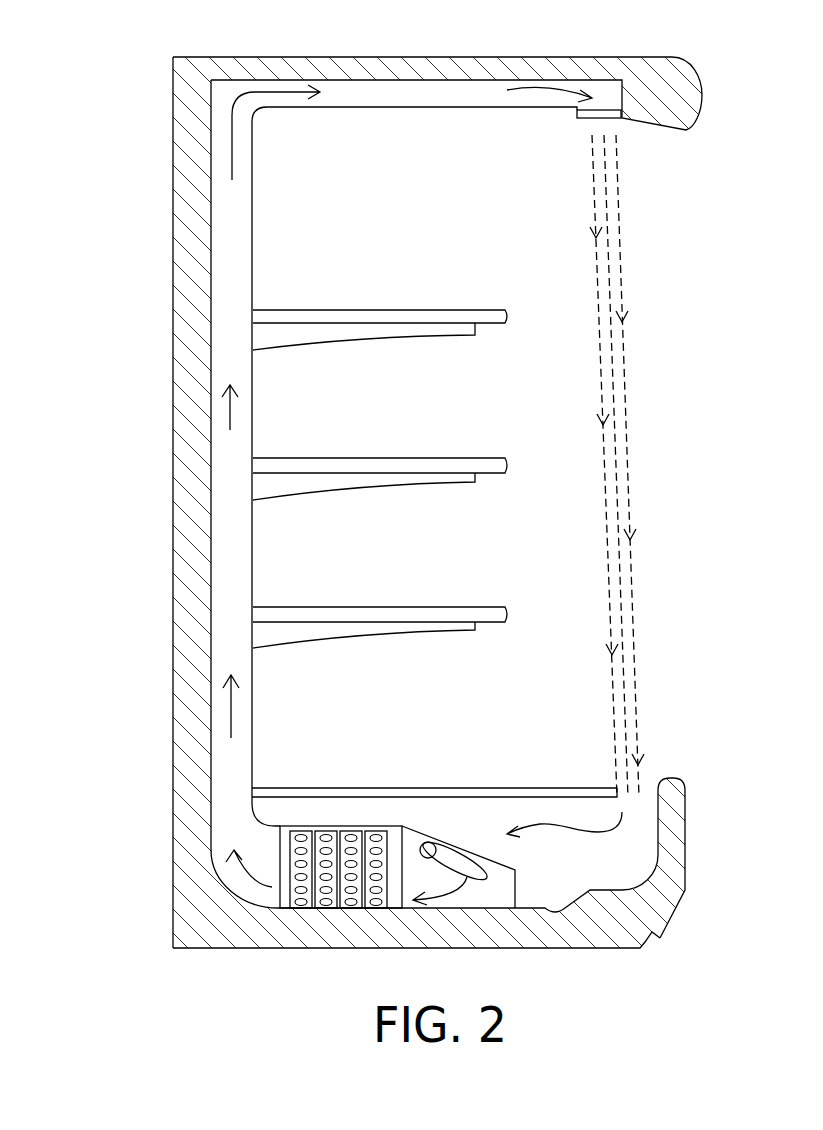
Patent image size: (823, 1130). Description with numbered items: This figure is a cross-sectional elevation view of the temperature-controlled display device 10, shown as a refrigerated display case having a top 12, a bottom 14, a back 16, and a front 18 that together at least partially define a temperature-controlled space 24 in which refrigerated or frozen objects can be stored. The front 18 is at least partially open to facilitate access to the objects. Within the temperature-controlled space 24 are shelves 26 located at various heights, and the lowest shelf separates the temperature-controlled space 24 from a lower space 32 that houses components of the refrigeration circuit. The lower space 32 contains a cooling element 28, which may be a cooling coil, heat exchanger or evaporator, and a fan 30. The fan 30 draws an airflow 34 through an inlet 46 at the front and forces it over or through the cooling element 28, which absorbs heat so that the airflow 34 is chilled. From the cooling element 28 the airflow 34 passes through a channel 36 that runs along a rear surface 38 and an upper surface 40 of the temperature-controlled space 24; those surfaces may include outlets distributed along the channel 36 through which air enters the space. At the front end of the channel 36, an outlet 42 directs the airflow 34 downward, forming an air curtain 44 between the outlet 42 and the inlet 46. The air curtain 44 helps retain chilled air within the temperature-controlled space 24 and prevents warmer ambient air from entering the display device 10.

The temperature-controlled display device 10 is at (72, 78).
The top 12 is at (566, 57).
The bottom 14 is at (225, 948).
The back 16 is at (173, 352).
The front 18 is at (688, 830).
The temperature-controlled space 24 is at (455, 221).
The shelves 26 is at (456, 310).
The cooling element 28 is at (325, 850).
The fan 30 is at (437, 850).
The lower space 32 is at (565, 880).
The airflow 34 is at (232, 415).
The channel 36 is at (245, 200).
The rear surface 38 is at (253, 240).
The upper surface 40 is at (415, 107).
The outlet 42 is at (578, 120).
The air curtain 44 is at (622, 432).
The inlet 46 is at (650, 785).